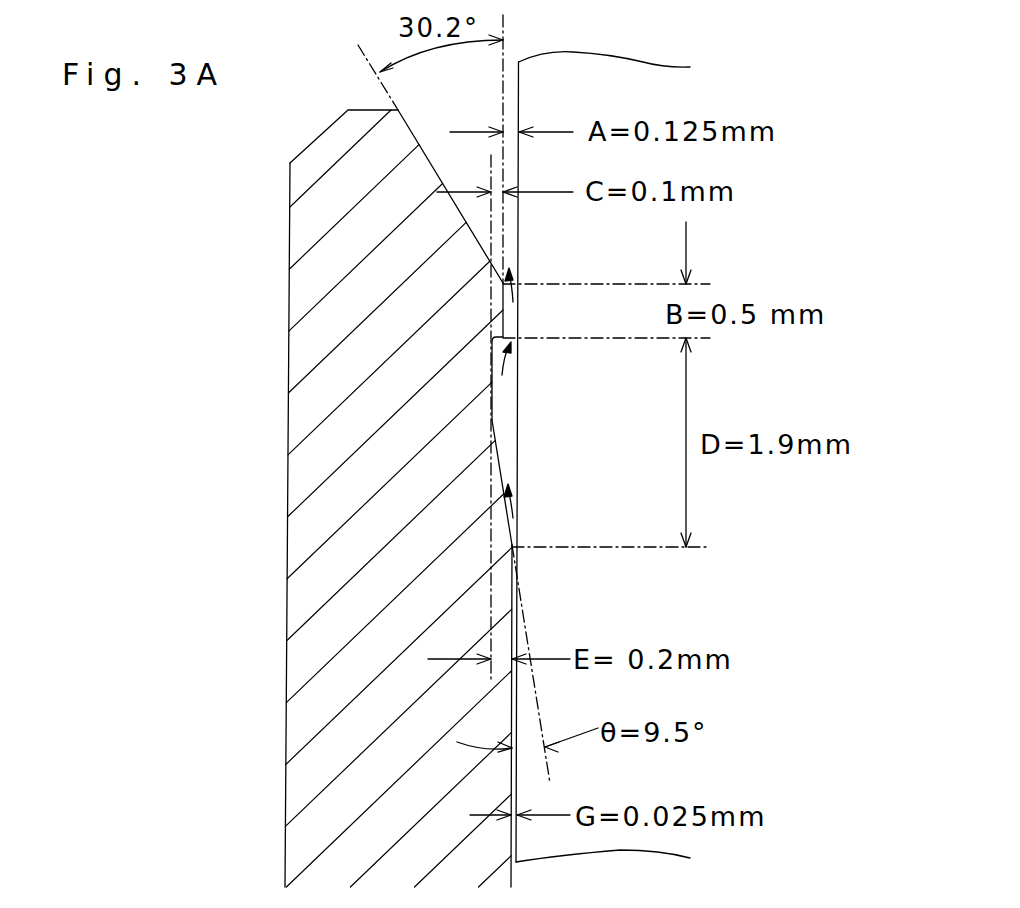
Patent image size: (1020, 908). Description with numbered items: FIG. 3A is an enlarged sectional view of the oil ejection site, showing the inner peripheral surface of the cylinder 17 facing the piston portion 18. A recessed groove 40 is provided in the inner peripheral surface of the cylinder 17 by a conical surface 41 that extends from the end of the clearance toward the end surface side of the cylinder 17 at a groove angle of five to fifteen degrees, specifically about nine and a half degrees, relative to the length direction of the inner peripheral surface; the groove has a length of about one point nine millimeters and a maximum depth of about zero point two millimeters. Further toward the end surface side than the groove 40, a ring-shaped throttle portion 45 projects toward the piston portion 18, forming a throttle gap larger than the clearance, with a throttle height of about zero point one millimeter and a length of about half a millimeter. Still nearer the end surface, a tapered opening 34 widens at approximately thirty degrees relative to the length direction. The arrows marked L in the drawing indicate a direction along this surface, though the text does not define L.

The cylinder 17 is at (297, 297).
The piston portion 18 is at (586, 67).
The tapered opening 34 is at (412, 132).
The throttle portion 45 is at (503, 315).
The recessed groove 40 is at (493, 407).
The conical surface 41 is at (500, 460).
The direction L is at (513, 268).